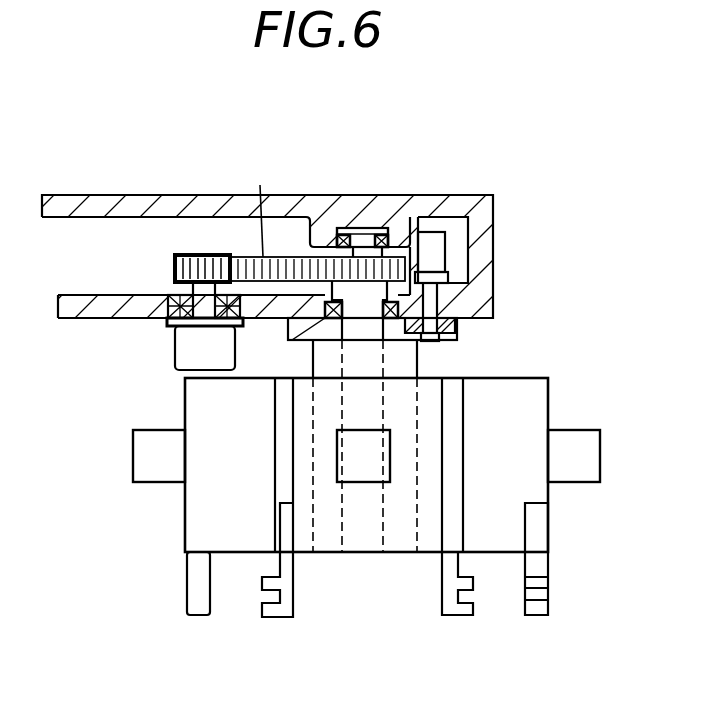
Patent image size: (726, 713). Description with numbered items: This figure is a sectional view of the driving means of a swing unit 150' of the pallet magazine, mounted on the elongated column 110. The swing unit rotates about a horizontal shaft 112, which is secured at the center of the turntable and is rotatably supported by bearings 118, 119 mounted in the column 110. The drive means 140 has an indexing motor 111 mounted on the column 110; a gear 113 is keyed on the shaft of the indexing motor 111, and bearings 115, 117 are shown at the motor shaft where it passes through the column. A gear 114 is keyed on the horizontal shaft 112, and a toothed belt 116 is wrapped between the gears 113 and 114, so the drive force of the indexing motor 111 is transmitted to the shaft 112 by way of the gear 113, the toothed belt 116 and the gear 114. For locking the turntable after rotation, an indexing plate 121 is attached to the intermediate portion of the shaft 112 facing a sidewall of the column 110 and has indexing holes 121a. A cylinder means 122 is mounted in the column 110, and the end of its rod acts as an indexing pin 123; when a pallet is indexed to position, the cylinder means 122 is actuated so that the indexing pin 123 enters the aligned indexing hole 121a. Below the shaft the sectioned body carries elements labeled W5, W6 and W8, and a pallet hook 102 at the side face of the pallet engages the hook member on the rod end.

The column 110 is at (64, 195).
The toothed belt 116 is at (245, 257).
The drive means 140 is at (256, 204).
The gear 114 is at (352, 252).
The bearing 118 is at (386, 250).
The gear 113 is at (197, 255).
The bearing 115 is at (187, 295).
The bearing 117 is at (165, 318).
The indexing motor 111 is at (175, 355).
The bearing 119 is at (292, 338).
The cylinder means 122 is at (447, 250).
The indexing pin 123 is at (452, 300).
The indexing plate 121 is at (450, 330).
The indexing hole 121a is at (432, 341).
The horizontal shaft 112 is at (387, 365).
The wire W6 is at (135, 468).
The wire W5 is at (356, 482).
The wire W8 is at (582, 482).
The pallet hook 102 is at (283, 612).
The holder assembly 150' is at (92, 573).